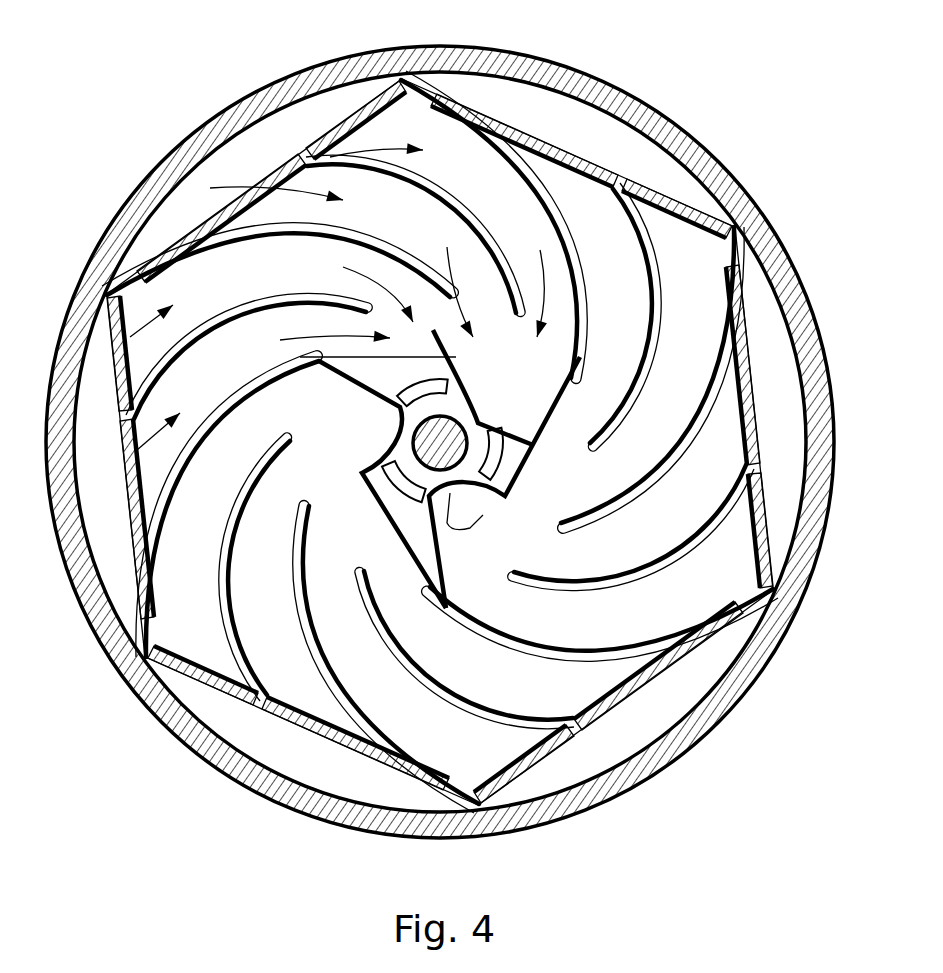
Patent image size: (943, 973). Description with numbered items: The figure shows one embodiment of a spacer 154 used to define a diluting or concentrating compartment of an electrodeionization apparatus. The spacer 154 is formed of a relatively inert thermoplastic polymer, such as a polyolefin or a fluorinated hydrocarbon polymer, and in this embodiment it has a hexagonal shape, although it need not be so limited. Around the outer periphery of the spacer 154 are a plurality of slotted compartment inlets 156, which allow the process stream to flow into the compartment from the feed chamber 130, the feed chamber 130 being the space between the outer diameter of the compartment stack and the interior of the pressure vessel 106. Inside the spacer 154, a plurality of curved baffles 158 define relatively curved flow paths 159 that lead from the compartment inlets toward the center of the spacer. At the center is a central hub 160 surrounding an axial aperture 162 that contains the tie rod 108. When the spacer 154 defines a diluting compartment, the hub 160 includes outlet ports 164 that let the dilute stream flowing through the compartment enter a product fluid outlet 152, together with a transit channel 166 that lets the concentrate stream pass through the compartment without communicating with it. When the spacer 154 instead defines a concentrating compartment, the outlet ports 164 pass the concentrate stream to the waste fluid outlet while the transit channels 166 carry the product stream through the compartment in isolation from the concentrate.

The pressure vessel 106 is at (622, 92).
The feed chamber 130 is at (440, 476).
The spacer 154 is at (418, 90).
The product fluid outlet 152 is at (440, 442).
The tie rod 108 is at (420, 440).
The central hub 160 is at (440, 345).
The axial aperture 162 is at (468, 458).
The outlet ports 164 is at (473, 510).
The transit channel 166 is at (363, 473).
The curved baffles 158 is at (225, 618).
The slotted compartment inlets 156 is at (673, 670).
The curved flow paths 159 is at (503, 780).